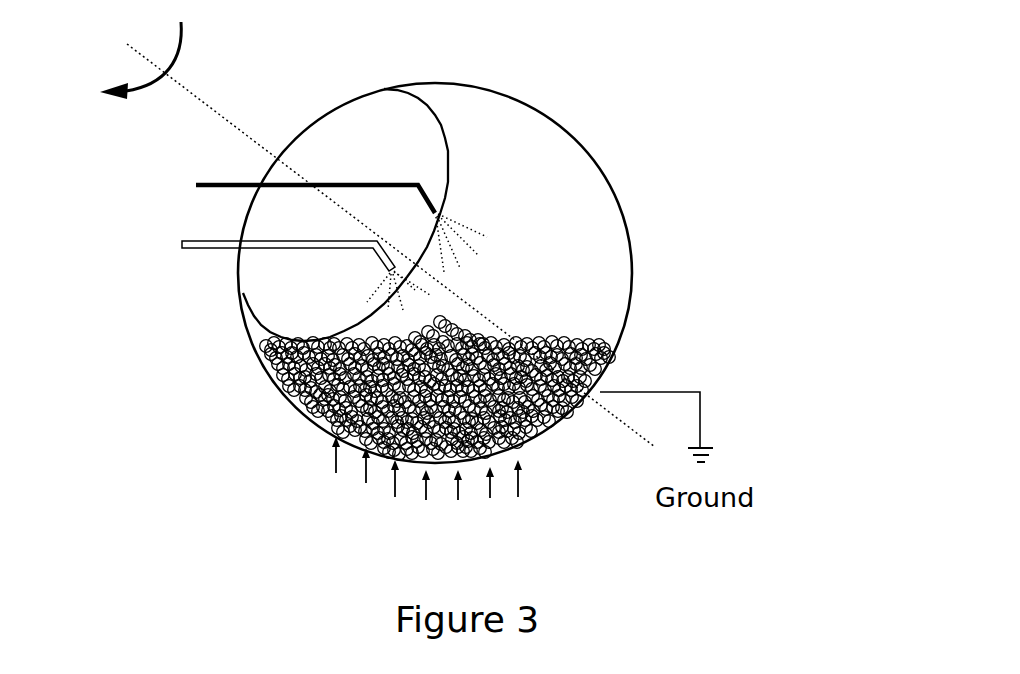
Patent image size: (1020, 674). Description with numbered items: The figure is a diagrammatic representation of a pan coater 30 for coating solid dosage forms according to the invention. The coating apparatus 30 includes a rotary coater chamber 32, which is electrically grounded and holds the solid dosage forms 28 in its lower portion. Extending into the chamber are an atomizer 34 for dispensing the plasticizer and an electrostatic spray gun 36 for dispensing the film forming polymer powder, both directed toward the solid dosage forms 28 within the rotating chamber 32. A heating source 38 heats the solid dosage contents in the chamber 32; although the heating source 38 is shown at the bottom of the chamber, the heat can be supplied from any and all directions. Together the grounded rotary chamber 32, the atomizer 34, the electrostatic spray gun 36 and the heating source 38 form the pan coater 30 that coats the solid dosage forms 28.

The solid dosage forms 28 is at (628, 343).
The pan coater 30 is at (640, 116).
The rotary coater chamber 32 is at (620, 233).
The atomizer 34 is at (207, 187).
The electrostatic spray gun 36 is at (197, 252).
The heating source 38 is at (427, 499).